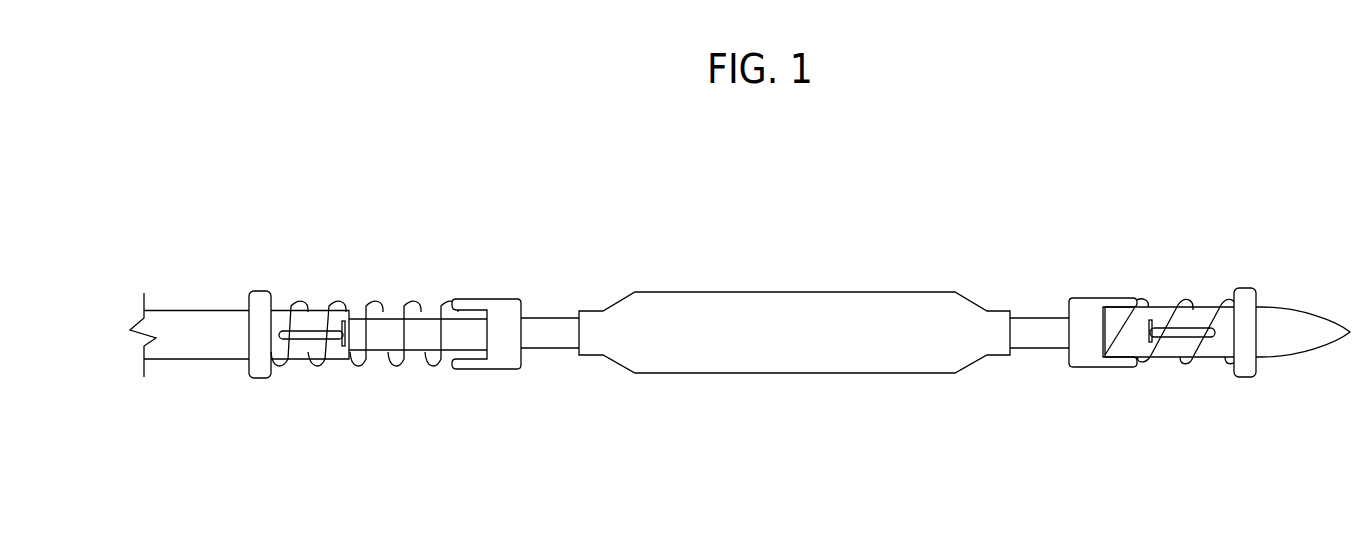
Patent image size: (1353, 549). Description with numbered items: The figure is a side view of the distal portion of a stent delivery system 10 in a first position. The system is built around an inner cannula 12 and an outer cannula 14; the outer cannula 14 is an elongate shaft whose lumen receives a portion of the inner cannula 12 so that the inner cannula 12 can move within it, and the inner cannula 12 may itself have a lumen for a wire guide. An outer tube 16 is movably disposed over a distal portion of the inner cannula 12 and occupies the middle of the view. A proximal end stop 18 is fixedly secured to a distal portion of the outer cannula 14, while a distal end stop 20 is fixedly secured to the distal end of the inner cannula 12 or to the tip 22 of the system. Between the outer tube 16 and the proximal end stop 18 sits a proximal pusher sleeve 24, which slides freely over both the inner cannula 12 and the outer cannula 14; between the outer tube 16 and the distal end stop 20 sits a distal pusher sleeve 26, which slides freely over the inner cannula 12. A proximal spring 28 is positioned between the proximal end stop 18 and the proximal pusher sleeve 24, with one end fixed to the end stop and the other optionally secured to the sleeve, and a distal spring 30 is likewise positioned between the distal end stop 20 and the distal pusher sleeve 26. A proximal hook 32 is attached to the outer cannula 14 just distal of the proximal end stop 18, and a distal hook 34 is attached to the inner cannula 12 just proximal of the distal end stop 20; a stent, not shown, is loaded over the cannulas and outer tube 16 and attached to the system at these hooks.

The stent delivery system 10 is at (646, 181).
The inner cannula 12 is at (550, 310).
The outer cannula 14 is at (195, 310).
The outer tube 16 is at (800, 373).
The proximal end stop 18 is at (260, 291).
The distal end stop 20 is at (1248, 288).
The tip 22 is at (1312, 357).
The proximal pusher sleeve 24 is at (500, 369).
The distal pusher sleeve 26 is at (1085, 367).
The proximal spring 28 is at (378, 304).
The distal spring 30 is at (1188, 302).
The proximal hook 32 is at (318, 339).
The distal hook 34 is at (1182, 338).